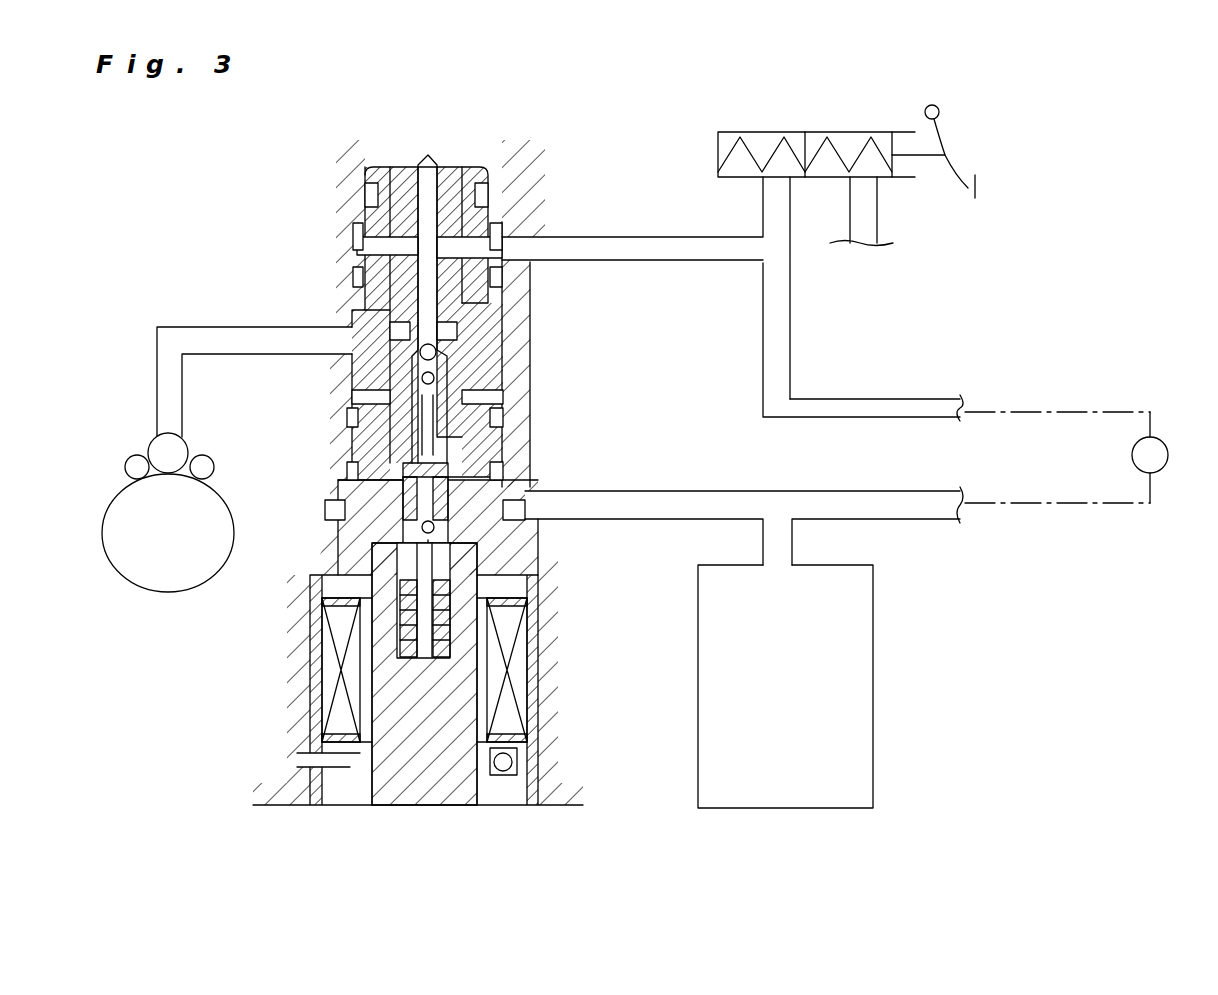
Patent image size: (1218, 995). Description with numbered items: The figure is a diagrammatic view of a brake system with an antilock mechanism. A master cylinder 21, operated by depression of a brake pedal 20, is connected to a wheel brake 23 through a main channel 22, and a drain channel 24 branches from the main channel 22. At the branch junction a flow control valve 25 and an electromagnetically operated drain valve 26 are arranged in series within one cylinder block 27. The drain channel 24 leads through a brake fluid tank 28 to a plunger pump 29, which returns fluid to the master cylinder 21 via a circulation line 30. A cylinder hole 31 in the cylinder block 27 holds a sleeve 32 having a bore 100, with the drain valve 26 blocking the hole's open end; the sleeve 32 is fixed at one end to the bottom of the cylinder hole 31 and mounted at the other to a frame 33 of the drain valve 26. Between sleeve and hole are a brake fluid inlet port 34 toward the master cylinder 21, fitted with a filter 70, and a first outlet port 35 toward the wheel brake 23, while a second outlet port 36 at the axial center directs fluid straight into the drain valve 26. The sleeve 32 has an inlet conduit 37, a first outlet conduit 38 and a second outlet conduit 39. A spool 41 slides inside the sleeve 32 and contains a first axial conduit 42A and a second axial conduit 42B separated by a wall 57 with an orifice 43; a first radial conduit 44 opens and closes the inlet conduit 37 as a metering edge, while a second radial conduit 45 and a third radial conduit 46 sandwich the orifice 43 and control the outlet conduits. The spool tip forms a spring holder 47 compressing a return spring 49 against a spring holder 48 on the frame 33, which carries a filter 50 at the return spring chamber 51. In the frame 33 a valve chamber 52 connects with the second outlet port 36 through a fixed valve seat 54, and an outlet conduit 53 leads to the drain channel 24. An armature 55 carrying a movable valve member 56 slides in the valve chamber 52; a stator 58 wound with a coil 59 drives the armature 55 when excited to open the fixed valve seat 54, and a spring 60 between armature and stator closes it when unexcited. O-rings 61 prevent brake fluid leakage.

The brake pedal 20 is at (975, 157).
The master cylinder 21 is at (818, 132).
The main channel 22 is at (265, 338).
The wheel brake 23 is at (95, 500).
The drain channel 24 is at (705, 491).
The flow control valve 25 is at (514, 318).
The drain valve 26 is at (572, 634).
The cylinder block 27 is at (318, 580).
The brake fluid tank 28 is at (873, 712).
The plunger pump 29 is at (1168, 460).
The circulation line 30 is at (872, 400).
The cylinder hole 31 is at (445, 150).
The sleeve 32 is at (378, 205).
The frame 33 is at (338, 490).
The brake fluid inlet port 34 is at (503, 255).
The first outlet port 35 is at (330, 362).
The second outlet port 36 is at (440, 448).
The inlet conduit 37 is at (515, 230).
The first outlet conduit 38 is at (505, 330).
The second outlet conduit 39 is at (480, 400).
The spool 41 is at (412, 230).
The first axial conduit 42A is at (426, 343).
The second axial conduit 42B is at (436, 378).
The orifice 43 is at (398, 258).
The first radial conduit 44 is at (372, 195).
The second radial conduit 45 is at (510, 300).
The third radial conduit 46 is at (505, 355).
The spring holder 47 is at (345, 392).
The spring holder 48 is at (347, 465).
The return spring 49 is at (496, 420).
The filter 50 is at (448, 470).
The return spring chamber 51 is at (347, 418).
The valve chamber 52 is at (465, 540).
The outlet conduit 53 is at (515, 530).
The fixed valve seat 54 is at (343, 522).
The armature 55 is at (470, 560).
The movable valve member 56 is at (400, 627).
The wall 57 is at (352, 300).
The stator 58 is at (460, 705).
The coil 59 is at (515, 666).
The spring 60 is at (375, 690).
The O-rings 61 is at (505, 175).
The filter 70 is at (505, 240).
The bore 100 is at (497, 165).